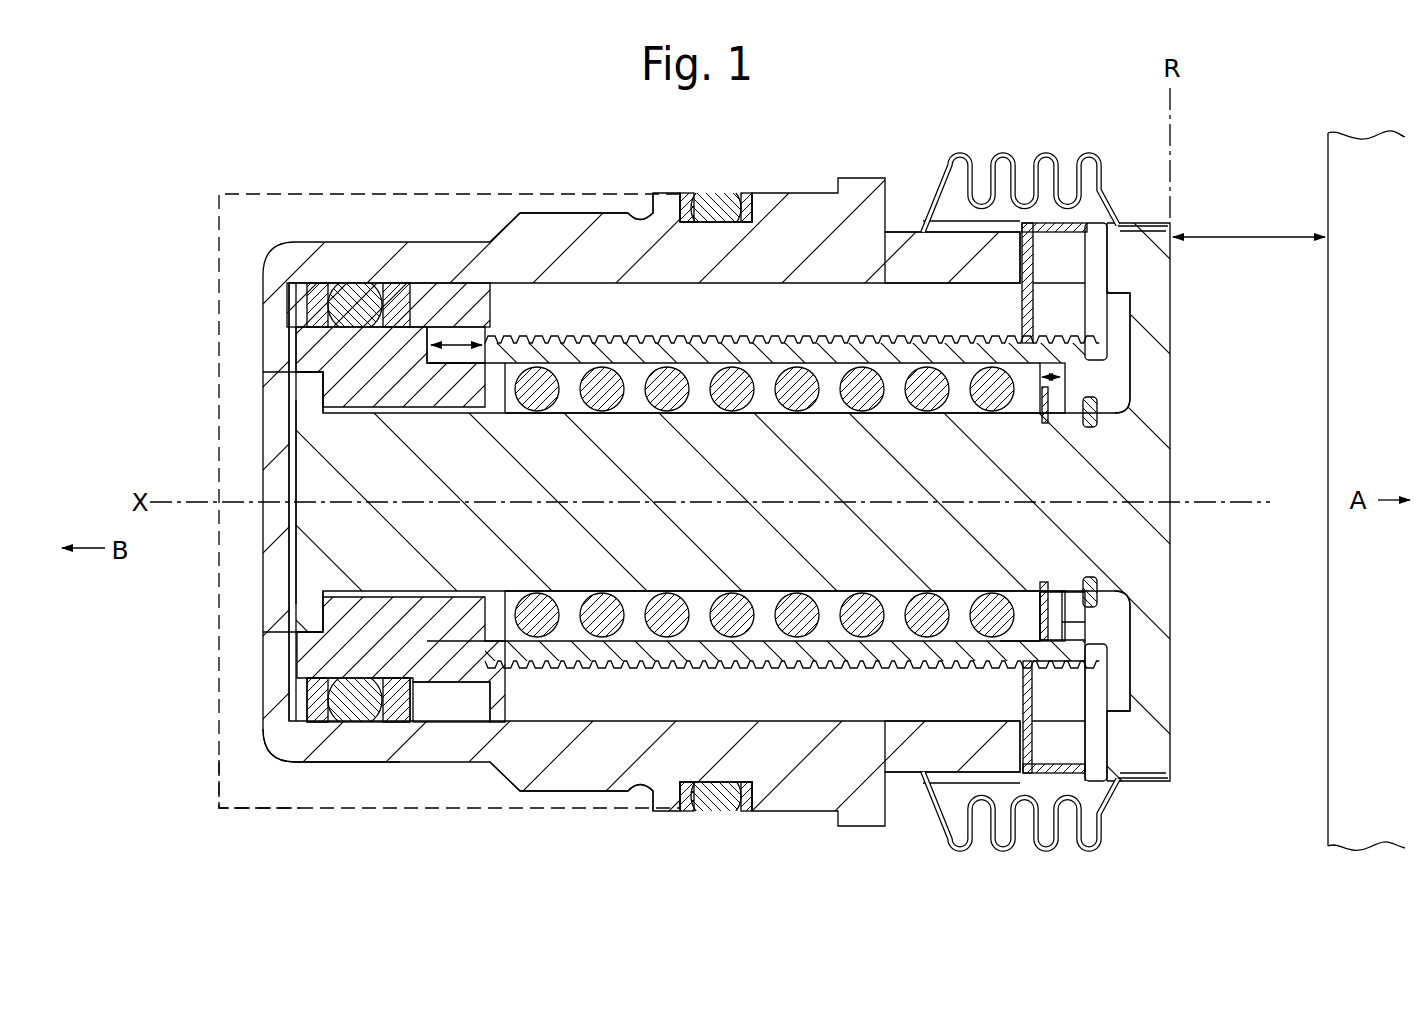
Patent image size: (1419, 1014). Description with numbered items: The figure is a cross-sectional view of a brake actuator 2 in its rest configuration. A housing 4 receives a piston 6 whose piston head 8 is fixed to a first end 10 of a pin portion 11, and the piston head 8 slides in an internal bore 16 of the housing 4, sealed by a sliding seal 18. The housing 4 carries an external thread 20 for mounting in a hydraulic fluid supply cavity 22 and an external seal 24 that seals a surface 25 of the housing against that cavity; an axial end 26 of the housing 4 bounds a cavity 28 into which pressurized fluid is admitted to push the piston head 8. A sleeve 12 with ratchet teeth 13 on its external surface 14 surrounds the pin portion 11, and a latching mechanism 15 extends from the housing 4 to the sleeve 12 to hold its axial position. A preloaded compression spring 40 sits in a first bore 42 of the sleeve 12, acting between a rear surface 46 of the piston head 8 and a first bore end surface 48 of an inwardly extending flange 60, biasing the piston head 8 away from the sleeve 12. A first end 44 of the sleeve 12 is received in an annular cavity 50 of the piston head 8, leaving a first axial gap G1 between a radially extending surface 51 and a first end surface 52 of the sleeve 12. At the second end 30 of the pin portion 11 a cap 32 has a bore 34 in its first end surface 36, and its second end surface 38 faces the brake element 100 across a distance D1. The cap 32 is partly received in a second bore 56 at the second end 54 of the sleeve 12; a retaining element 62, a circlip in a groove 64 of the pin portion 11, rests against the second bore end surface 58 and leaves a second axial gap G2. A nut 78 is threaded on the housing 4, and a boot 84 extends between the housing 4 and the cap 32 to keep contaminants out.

The brake actuator 2 is at (176, 215).
The housing 4 is at (558, 236).
The piston 6 is at (300, 372).
The piston head 8 is at (345, 657).
The first end of pin portion 10 is at (355, 462).
The pin portion 11 is at (300, 490).
The sleeve 12 is at (955, 650).
The ratchet teeth 13 is at (880, 668).
The external surface of sleeve 14 is at (793, 668).
The latching mechanism 15 is at (1022, 296).
The internal bore 16 is at (683, 800).
The sliding seal 18 is at (352, 290).
The external thread 20 is at (572, 790).
The hydraulic fluid supply cavity 22 is at (268, 805).
The external seal 24 is at (718, 812).
The surface of housing 25 is at (650, 800).
The axial end of housing 26 is at (290, 703).
The cavity 28 is at (298, 712).
The second end of pin portion 30 is at (1070, 455).
The cap 32 is at (1150, 490).
The bore of cap 34 is at (1097, 412).
The first end surface of cap 36 is at (1048, 390).
The second end surface of cap 38 is at (1172, 295).
The resilient member 40 is at (507, 664).
The first bore 42 is at (547, 664).
The first end of sleeve 44 is at (455, 684).
The rear surface of piston head 46 is at (487, 664).
The first bore end surface 48 is at (990, 655).
The annular cavity 50 is at (408, 702).
The radially extending surface 51 is at (430, 640).
The first end surface of sleeve 52 is at (345, 701).
The second end of sleeve 54 is at (1032, 668).
The second bore 56 is at (1040, 630).
The second bore end surface 58 is at (1062, 612).
The inwardly extending flange 60 is at (1017, 632).
The retaining element 62 is at (1097, 602).
The circumferentially extending groove 64 is at (1048, 580).
The retaining element 78 is at (1070, 250).
The boot 84 is at (1003, 143).
The brake element 100 is at (1328, 833).
The first axial gap G1 is at (450, 336).
The second axial gap G2 is at (1052, 372).
The distance D1 is at (1249, 223).